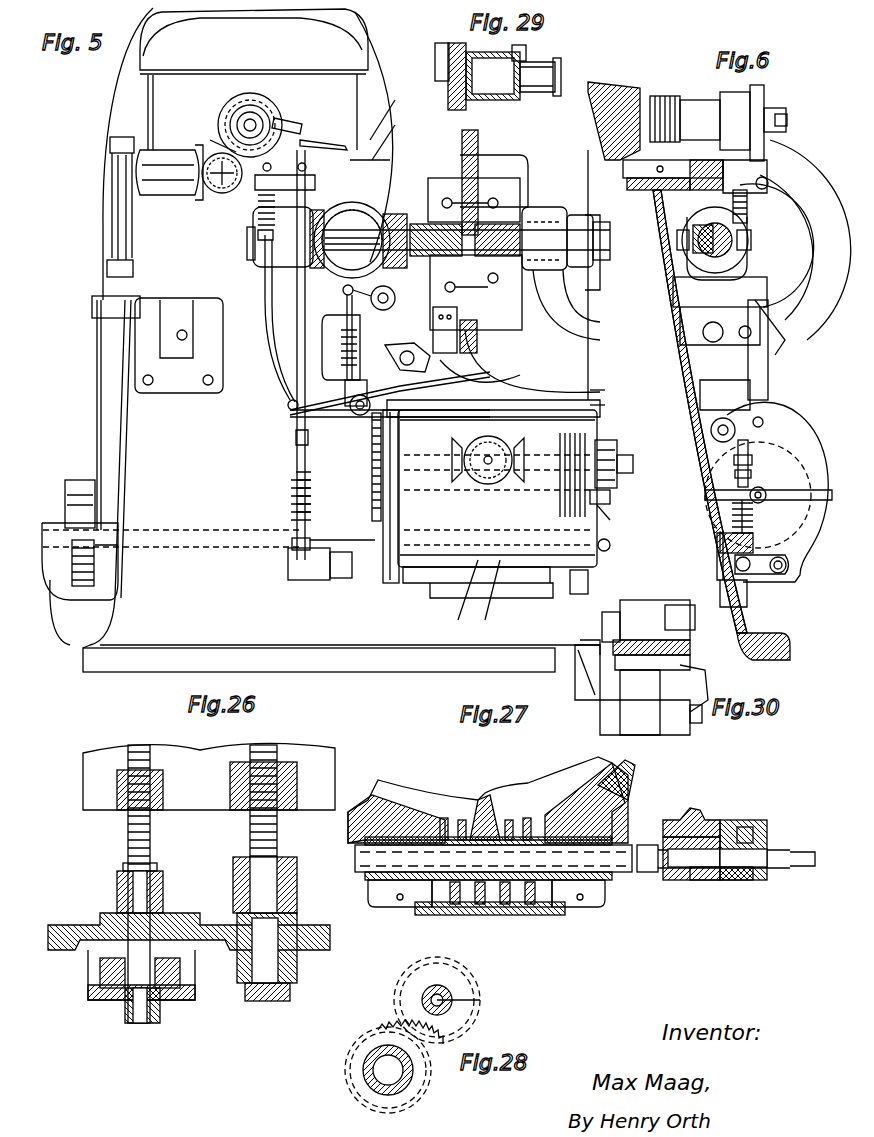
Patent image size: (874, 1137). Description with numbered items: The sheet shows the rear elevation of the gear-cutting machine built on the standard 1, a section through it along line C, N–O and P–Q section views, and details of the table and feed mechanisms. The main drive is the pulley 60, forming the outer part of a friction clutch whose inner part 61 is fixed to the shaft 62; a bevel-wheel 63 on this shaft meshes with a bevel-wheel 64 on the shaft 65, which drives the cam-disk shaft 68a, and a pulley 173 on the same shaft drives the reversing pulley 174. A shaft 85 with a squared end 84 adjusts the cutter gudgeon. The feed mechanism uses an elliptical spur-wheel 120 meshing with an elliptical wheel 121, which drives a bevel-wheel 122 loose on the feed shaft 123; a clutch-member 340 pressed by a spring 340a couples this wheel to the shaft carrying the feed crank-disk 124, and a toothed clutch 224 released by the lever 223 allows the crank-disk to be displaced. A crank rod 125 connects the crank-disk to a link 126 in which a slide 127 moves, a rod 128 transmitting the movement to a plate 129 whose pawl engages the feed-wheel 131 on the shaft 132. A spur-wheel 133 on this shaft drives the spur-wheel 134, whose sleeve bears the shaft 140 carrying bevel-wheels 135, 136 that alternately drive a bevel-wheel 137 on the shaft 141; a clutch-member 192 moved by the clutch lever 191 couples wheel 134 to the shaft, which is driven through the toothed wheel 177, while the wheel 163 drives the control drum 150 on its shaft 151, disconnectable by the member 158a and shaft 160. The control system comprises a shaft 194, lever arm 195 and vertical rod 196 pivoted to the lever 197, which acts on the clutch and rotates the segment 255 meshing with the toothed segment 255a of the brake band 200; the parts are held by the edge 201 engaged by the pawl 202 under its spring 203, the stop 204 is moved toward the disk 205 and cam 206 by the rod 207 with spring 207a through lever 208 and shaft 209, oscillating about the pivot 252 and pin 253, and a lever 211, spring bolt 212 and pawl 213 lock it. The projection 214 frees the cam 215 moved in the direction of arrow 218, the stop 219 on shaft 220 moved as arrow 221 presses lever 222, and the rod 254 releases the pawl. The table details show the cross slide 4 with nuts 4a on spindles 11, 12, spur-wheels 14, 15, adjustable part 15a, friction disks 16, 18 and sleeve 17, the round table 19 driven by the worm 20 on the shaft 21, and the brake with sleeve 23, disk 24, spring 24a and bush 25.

In FIG. 5, the standard 1 is at (250, 628).
In FIG. 6, the standard 1 is at (696, 470).
In FIG. 30, the standard 1 is at (632, 690).
In FIG. 26, the cross slide 4 is at (203, 805).
In FIG. 27, the cross slide 4 is at (635, 797).
In FIG. 26, the nuts 4a is at (320, 778).
In FIG. 26, the screw spindle 11 is at (252, 830).
In FIG. 26, the screw spindle 12 is at (128, 832).
In FIG. 26, the spur-wheel 14 is at (292, 950).
In FIG. 26, the spur-wheel 15 is at (88, 960).
In FIG. 26, the adjustable part 15a is at (190, 990).
In FIG. 26, the friction disks 16 is at (182, 968).
In FIG. 26, the sleeve 17 is at (118, 930).
In FIG. 26, the friction disks 18 is at (100, 975).
In FIG. 27, the round table 19 is at (538, 790).
In FIG. 27, the worm 20 is at (508, 915).
In FIG. 27, the shaft 21 is at (640, 875).
In FIG. 27, the sleeve 23 is at (680, 880).
In FIG. 27, the disk 24 is at (732, 880).
In FIG. 27, the spring 24a is at (753, 838).
In FIG. 27, the stationary bush 25 is at (705, 825).
In FIG. 5, the pulley 60 is at (525, 178).
In FIG. 5, the inner part of friction clutch 61 is at (462, 168).
In FIG. 6, the inner part of friction clutch 61 is at (775, 185).
In FIG. 5, the shaft 62 is at (392, 213).
In FIG. 6, the shaft 62 is at (748, 238).
In FIG. 5, the bevel-wheel 63 is at (345, 210).
In FIG. 5, the bevel-wheel 64 is at (345, 215).
In FIG. 5, the shaft 65 is at (297, 298).
In FIG. 28, the cam-disk shaft 68a is at (440, 998).
In FIG. 5, the squared end 84 is at (257, 120).
In FIG. 6, the squared end 84 is at (782, 122).
In FIG. 28, the shaft 85 is at (480, 1000).
In FIG. 6, the elliptical spur-wheel 120 is at (667, 96).
In FIG. 28, the elliptical spur-wheel 120 is at (400, 1013).
In FIG. 6, the elliptical wheel 121 is at (655, 202).
In FIG. 28, the elliptical wheel 121 is at (378, 1032).
In FIG. 5, the bevel-wheel 122 is at (197, 198).
In FIG. 29, the bevel-wheel 122 is at (525, 95).
In FIG. 29, the feed shaft 123 is at (452, 100).
In FIG. 5, the feed crank-disk 124 is at (127, 195).
In FIG. 29, the feed crank-disk 124 is at (483, 100).
In FIG. 5, the crank rod 125 is at (118, 246).
In FIG. 5, the link 126 is at (109, 280).
In FIG. 5, the slide 127 is at (105, 312).
In FIG. 5, the rod 128 is at (97, 395).
In FIG. 5, the plate 129 is at (78, 475).
In FIG. 5, the feed-wheel 131 is at (95, 572).
In FIG. 5, the shaft 132 is at (208, 554).
In FIG. 5, the spur-wheel 133 is at (580, 580).
In FIG. 5, the spur-wheel 134 is at (572, 480).
In FIG. 5, the bevel-wheel 135 is at (548, 437).
In FIG. 5, the bevel-wheel 136 is at (458, 480).
In FIG. 5, the bevel-wheel 137 is at (486, 468).
In FIG. 5, the shaft 140 is at (628, 455).
In FIG. 5, the shaft 141 is at (457, 598).
In FIG. 6, the drum 150 is at (790, 445).
In FIG. 6, the shaft 151 is at (765, 490).
In FIG. 5, the member 158a is at (612, 543).
In FIG. 5, the shaft 160 is at (612, 516).
In FIG. 5, the wheel 163 is at (489, 598).
In FIG. 6, the pulley 173 is at (612, 226).
In FIG. 5, the pulley 174 is at (607, 405).
In FIG. 5, the toothed wheel 177 is at (344, 539).
In FIG. 5, the clutch lever 191 is at (612, 494).
In FIG. 5, the clutch-member 192 is at (612, 452).
In FIG. 5, the shaft 194 is at (370, 440).
In FIG. 6, the shaft 194 is at (712, 434).
In FIG. 5, the lever arm 195 is at (345, 440).
In FIG. 6, the lever arm 195 is at (775, 430).
In FIG. 5, the vertical rod 196 is at (345, 388).
In FIG. 6, the vertical rod 196 is at (768, 395).
In FIG. 30, the vertical rod 196 is at (698, 724).
In FIG. 5, the lever 197 is at (343, 296).
In FIG. 6, the lever 197 is at (680, 250).
In FIG. 30, the lever 197 is at (672, 700).
In FIG. 5, the brake band 200 is at (490, 372).
In FIG. 6, the brake band 200 is at (782, 345).
In FIG. 30, the brake band 200 is at (628, 610).
In FIG. 5, the edge 201 is at (296, 436).
In FIG. 5, the pawl 202 is at (416, 398).
In FIG. 5, the spring 203 is at (252, 250).
In FIG. 5, the stop 204 is at (322, 142).
In FIG. 6, the stop 204 is at (700, 100).
In FIG. 6, the disk 205 is at (735, 100).
In FIG. 5, the cam 206 is at (292, 122).
In FIG. 6, the cam 206 is at (764, 110).
In FIG. 5, the rod 207 is at (280, 372).
In FIG. 6, the rod 207 is at (755, 525).
In FIG. 5, the spring 207a is at (291, 508).
In FIG. 5, the lever 208 is at (303, 582).
In FIG. 6, the lever 208 is at (758, 575).
In FIG. 5, the shaft 209 is at (345, 580).
In FIG. 6, the shaft 209 is at (785, 575).
In FIG. 5, the lever 211 is at (225, 150).
In FIG. 5, the spring bolt 212 is at (340, 205).
In FIG. 6, the spring bolt 212 is at (733, 198).
In FIG. 5, the pawl 213 is at (365, 158).
In FIG. 6, the pawl 213 is at (760, 178).
In FIG. 5, the projection 214 is at (380, 355).
In FIG. 6, the projection 214 is at (680, 320).
In FIG. 30, the projection 214 is at (700, 682).
In FIG. 5, the cam 215 is at (272, 333).
In FIG. 5, the arrow 218 is at (500, 392).
In FIG. 5, the stop 219 is at (607, 387).
In FIG. 5, the shaft 220 is at (288, 403).
In FIG. 5, the arrow 221 is at (440, 355).
In FIG. 5, the lever 222 is at (397, 380).
In FIG. 5, the lever 223 is at (380, 135).
In FIG. 6, the lever 223 is at (640, 155).
In FIG. 6, the toothed clutch 224 is at (640, 115).
In FIG. 5, the pivot 252 is at (250, 108).
In FIG. 5, the pin 253 is at (390, 135).
In FIG. 5, the rod 254 is at (265, 300).
In FIG. 6, the rod 254 is at (800, 190).
In FIG. 5, the segment 255 is at (405, 222).
In FIG. 30, the segment 255 is at (668, 648).
In FIG. 30, the toothed segment 255a is at (590, 665).
In FIG. 5, the clutch-member 340 is at (225, 196).
In FIG. 29, the clutch-member 340 is at (527, 58).
In FIG. 29, the spring 340a is at (557, 96).
In FIG. 5, the section line C—D C is at (221, 88).
In FIG. 5, the section line N—O N is at (113, 170).
In FIG. 5, the section line N— O is at (236, 180).
In FIG. 6, the section line P—Q P is at (647, 293).
In FIG. 6, the section line P— Q is at (763, 293).